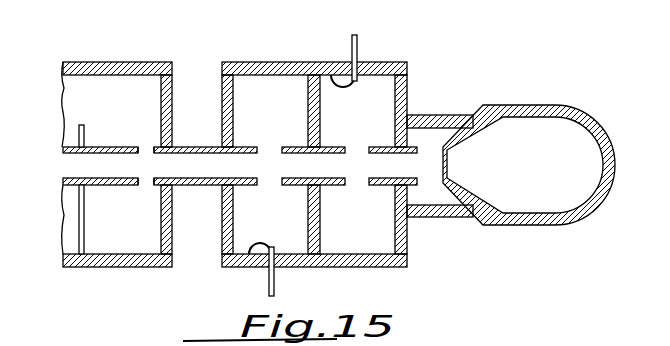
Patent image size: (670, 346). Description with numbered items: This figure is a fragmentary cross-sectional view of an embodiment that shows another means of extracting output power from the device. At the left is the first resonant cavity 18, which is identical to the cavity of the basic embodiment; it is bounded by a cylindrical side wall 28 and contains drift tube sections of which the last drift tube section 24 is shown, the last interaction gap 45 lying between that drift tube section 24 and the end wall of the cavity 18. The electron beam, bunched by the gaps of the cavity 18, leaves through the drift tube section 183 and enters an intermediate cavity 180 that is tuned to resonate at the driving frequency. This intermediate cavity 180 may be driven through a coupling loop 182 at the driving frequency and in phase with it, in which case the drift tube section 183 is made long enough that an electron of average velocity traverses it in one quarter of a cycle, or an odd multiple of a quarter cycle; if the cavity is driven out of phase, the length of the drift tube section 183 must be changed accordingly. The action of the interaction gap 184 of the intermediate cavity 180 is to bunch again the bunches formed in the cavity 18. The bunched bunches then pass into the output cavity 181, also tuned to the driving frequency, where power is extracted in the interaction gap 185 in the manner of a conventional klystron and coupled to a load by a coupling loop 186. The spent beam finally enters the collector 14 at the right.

The first resonant cavity 18 is at (75, 93).
The cylindrical side wall 28 is at (119, 62).
The drift tube section 24 is at (108, 147).
The interaction gap 45 is at (143, 155).
The drift tube section 183 is at (187, 147).
The intermediate cavity 180 is at (258, 82).
The output cavity 181 is at (387, 61).
The interaction gap 184 is at (265, 150).
The interaction gap 185 is at (357, 173).
The coupling loop 182 is at (268, 243).
The coupling loop 186 is at (343, 87).
The collector 14 is at (545, 105).